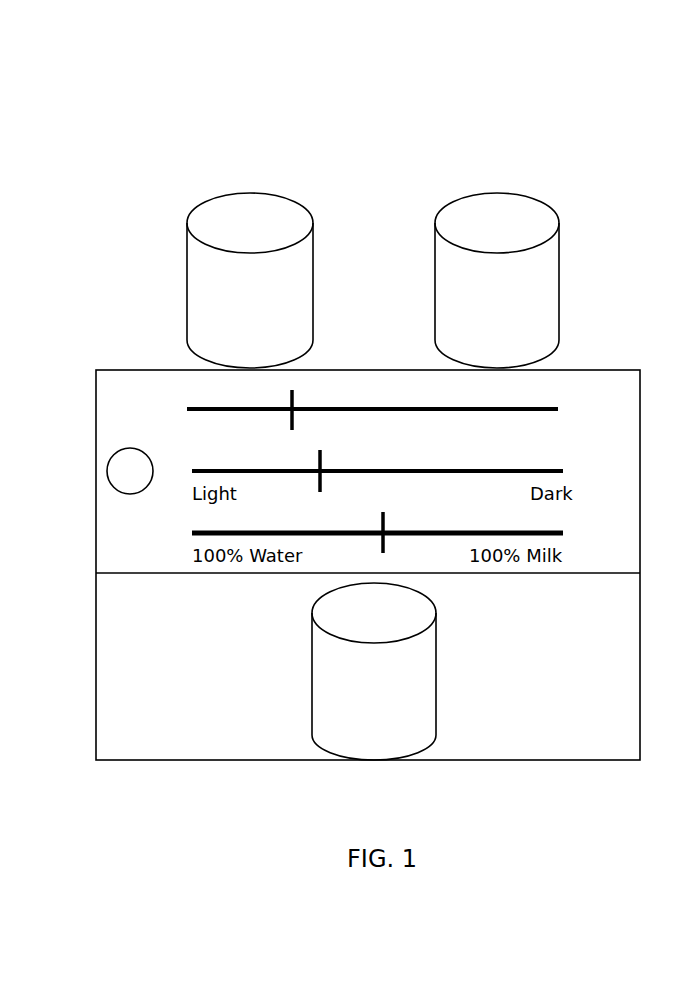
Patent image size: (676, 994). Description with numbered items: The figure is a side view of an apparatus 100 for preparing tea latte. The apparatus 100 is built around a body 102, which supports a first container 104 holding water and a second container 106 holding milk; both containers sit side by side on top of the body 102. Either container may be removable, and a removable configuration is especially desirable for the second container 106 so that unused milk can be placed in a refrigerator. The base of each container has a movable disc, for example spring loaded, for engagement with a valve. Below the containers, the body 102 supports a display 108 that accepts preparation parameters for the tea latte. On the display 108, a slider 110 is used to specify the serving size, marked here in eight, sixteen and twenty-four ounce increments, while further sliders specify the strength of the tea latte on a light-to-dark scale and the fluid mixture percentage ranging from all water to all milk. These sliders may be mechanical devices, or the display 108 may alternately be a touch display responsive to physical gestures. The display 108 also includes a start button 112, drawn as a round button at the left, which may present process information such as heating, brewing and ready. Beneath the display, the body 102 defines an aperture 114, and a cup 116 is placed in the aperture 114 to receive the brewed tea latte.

The apparatus 100 is at (522, 121).
The body 102 is at (127, 375).
The first container 104 is at (230, 198).
The second container 106 is at (467, 193).
The display 108 is at (94, 543).
The slider 110 is at (288, 420).
The start button 112 is at (106, 472).
The aperture 114 is at (165, 748).
The cup 116 is at (437, 645).